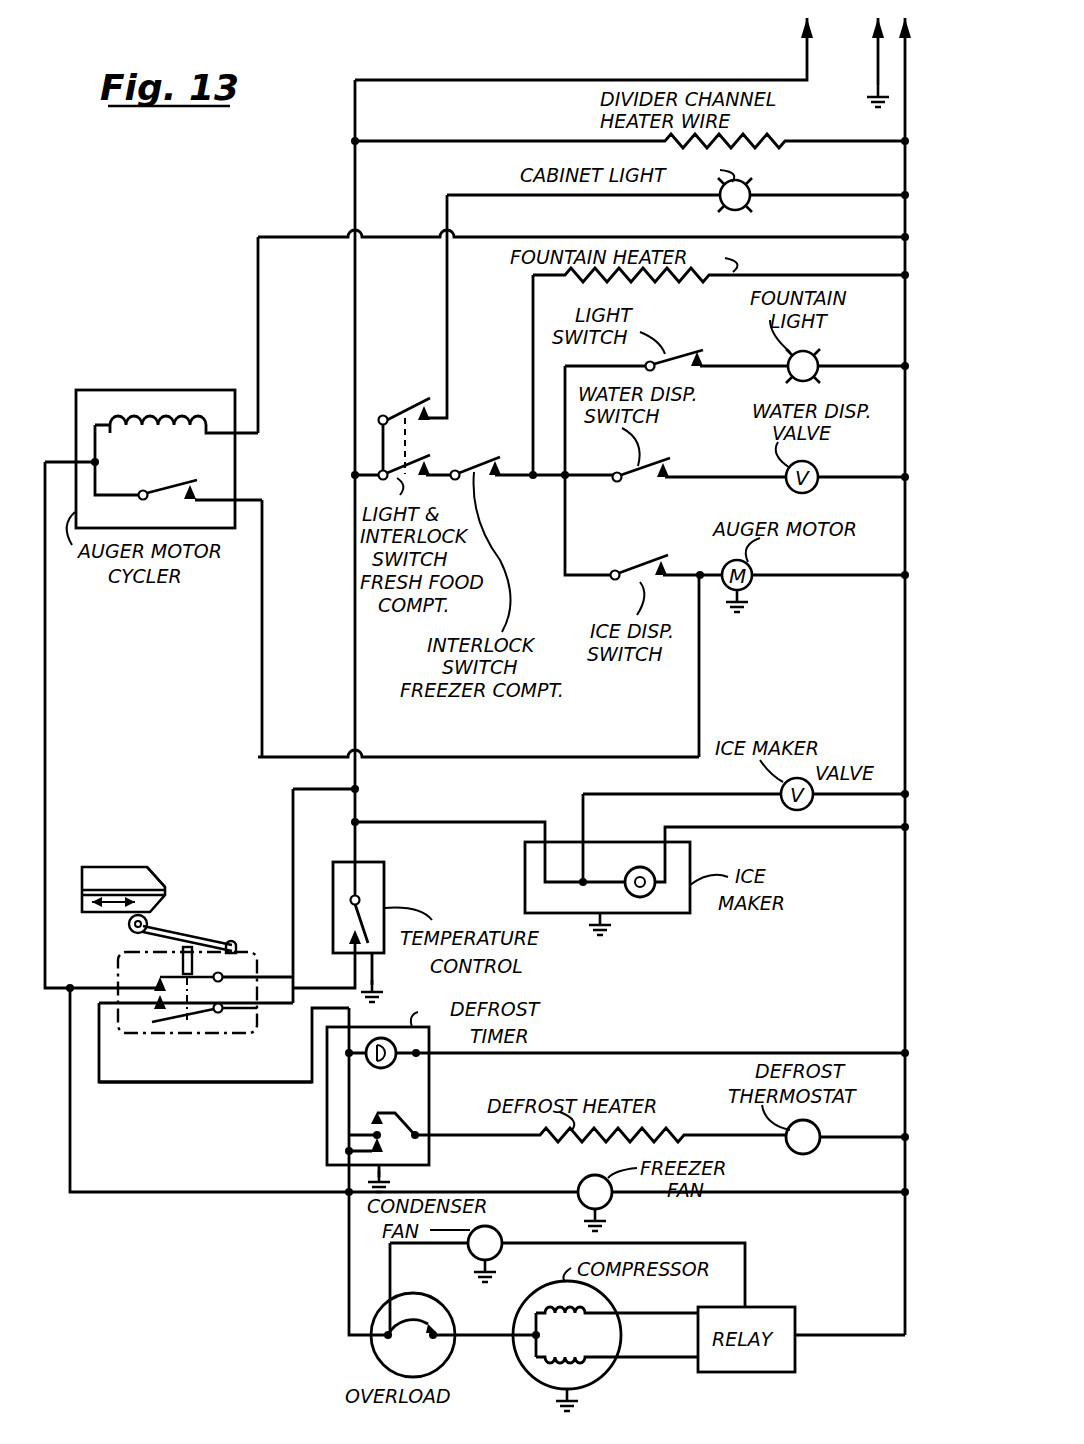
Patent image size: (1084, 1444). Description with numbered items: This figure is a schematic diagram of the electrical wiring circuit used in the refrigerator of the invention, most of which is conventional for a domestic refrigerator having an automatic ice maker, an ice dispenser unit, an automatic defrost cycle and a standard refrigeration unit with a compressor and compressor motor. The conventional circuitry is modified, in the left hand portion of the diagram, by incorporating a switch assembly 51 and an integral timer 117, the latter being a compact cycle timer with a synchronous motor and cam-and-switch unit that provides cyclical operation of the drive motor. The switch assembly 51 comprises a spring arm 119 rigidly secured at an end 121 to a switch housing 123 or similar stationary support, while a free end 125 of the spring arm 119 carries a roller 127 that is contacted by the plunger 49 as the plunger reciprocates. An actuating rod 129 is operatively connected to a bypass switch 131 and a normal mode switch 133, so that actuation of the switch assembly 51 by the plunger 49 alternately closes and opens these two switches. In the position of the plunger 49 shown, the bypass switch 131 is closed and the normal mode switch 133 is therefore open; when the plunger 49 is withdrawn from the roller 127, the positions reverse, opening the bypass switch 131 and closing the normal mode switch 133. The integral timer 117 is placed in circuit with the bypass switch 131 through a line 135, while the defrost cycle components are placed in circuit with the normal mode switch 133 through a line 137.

The integral timer 117 is at (160, 388).
The line 135 is at (48, 613).
The plunger 49 is at (103, 868).
The roller 127 is at (158, 896).
The free end 125 is at (132, 935).
The spring arm 119 is at (170, 930).
The end 121 is at (232, 940).
The actuating rod 129 is at (192, 958).
The switch assembly 51 is at (113, 968).
The bypass switch 131 is at (167, 972).
The normal mode switch 133 is at (190, 1020).
The switch housing 123 is at (210, 1057).
The line 137 is at (158, 1082).